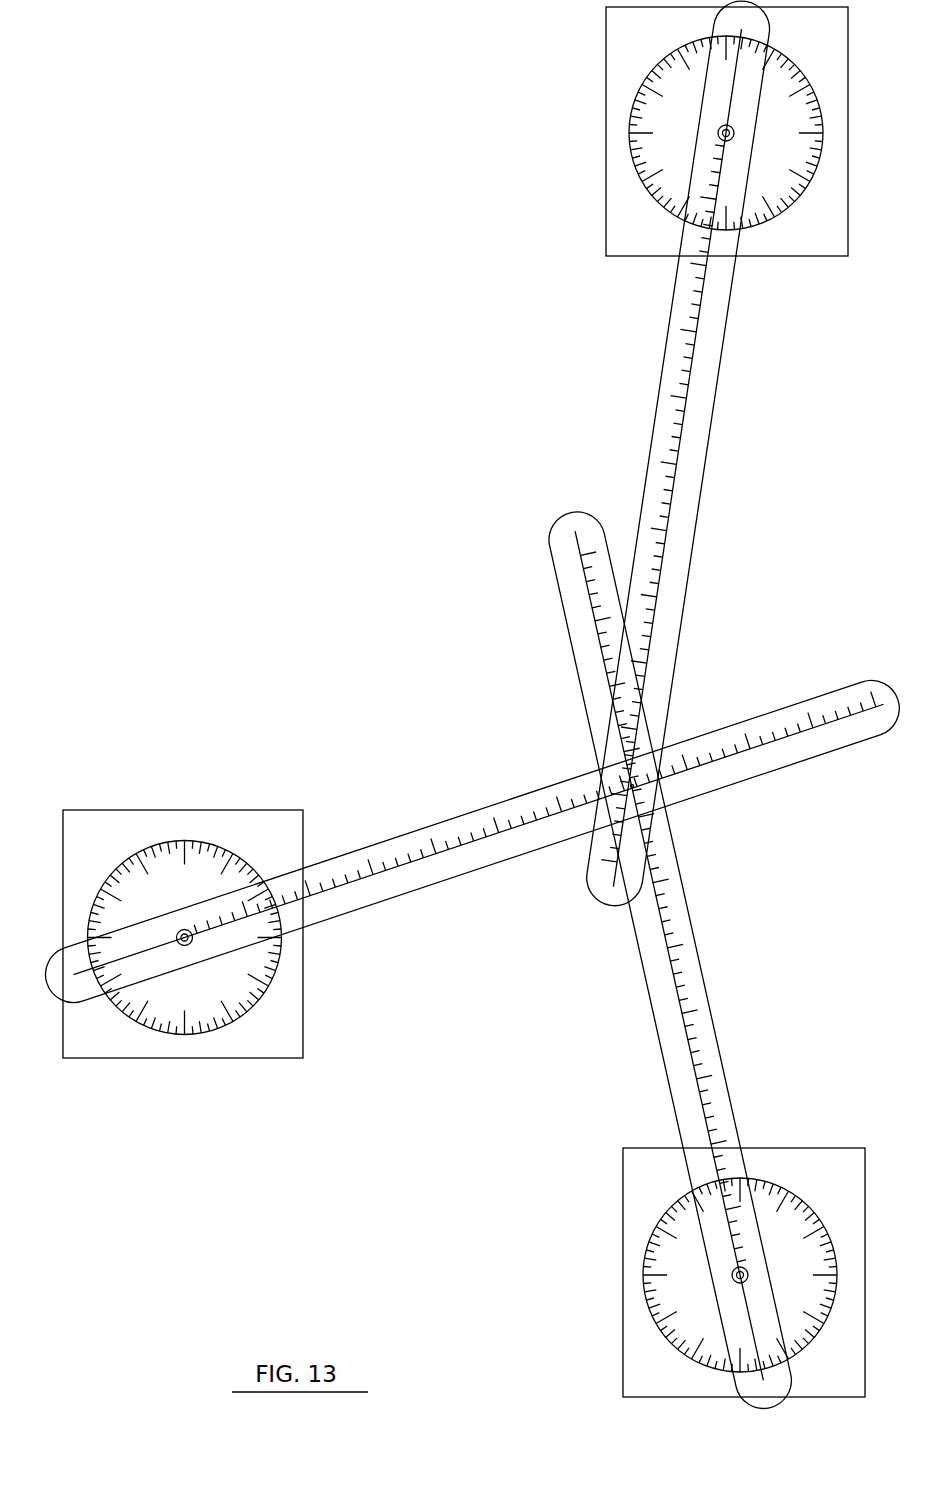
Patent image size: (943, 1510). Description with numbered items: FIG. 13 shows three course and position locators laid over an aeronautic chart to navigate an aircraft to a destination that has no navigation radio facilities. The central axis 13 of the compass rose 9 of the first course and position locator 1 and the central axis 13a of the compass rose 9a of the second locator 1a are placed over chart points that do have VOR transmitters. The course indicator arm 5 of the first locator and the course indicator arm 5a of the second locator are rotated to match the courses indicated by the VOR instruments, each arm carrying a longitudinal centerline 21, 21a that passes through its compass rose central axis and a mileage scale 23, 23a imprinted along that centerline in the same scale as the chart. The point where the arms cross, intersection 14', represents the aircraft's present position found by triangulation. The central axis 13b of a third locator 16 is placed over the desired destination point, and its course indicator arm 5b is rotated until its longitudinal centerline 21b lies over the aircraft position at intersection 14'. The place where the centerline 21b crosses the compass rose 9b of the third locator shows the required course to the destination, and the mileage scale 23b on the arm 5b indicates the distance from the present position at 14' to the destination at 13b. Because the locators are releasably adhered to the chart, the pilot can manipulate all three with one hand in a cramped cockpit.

The course and position locator 1 is at (209, 962).
The second course and position locator 1a is at (684, 1264).
The third course plotter 16 is at (666, 168).
The course indicator arm 5 is at (471, 807).
The course indicator arm of second locator 5a is at (651, 960).
The course indicator arm of third locator 5b is at (693, 455).
The compass rose 9 is at (253, 1008).
The compass rose of second locator 9a is at (672, 1205).
The compass rose of third locator 9b is at (797, 210).
The central axis 13 is at (180, 930).
The central axis of second locator 13a is at (733, 1278).
The central axis of third locator 13b is at (718, 130).
The intersection 14' is at (713, 807).
The longitudinal centerline 21 is at (482, 847).
The longitudinal centerline of second arm 21a is at (678, 954).
The longitudinal centerline of third arm 21b is at (669, 456).
The mileage scale 23 is at (378, 870).
The mileage scale of second arm 23a is at (668, 990).
The mileage scale of third arm 23b is at (690, 397).